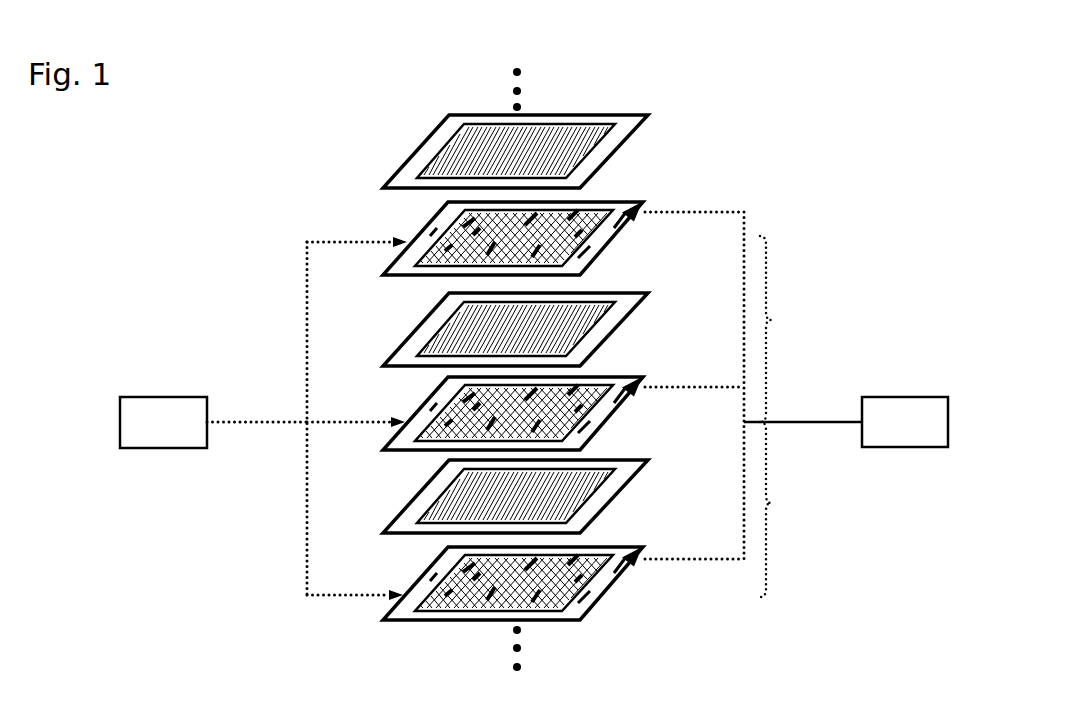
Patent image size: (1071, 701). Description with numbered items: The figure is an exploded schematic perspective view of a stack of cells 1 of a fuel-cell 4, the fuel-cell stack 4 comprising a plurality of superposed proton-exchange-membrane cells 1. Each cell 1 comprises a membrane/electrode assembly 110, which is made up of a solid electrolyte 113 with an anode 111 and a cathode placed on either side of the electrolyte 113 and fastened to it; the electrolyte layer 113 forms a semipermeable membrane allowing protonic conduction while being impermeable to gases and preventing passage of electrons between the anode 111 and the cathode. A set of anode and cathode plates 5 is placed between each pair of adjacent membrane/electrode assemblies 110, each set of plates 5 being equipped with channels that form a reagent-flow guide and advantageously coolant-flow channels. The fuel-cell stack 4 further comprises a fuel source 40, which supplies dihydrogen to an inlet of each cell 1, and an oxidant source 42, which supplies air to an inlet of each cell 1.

The cell 1 is at (786, 416).
The fuel-cell stack 4 is at (797, 119).
The set of anode and cathode plates 5 is at (630, 237).
The fuel source 40 is at (148, 435).
The oxidant source 42 is at (890, 435).
The membrane/electrode assembly 110 is at (630, 152).
The anode 111 is at (450, 150).
The solid electrolyte 113 is at (440, 150).